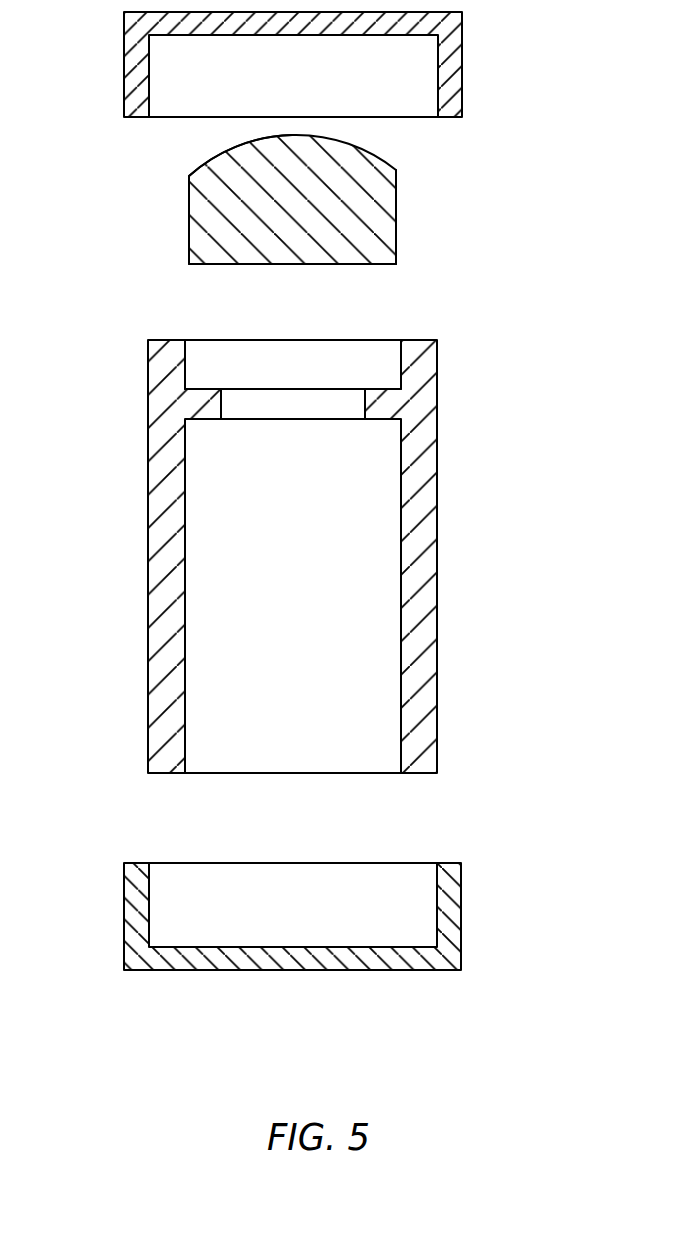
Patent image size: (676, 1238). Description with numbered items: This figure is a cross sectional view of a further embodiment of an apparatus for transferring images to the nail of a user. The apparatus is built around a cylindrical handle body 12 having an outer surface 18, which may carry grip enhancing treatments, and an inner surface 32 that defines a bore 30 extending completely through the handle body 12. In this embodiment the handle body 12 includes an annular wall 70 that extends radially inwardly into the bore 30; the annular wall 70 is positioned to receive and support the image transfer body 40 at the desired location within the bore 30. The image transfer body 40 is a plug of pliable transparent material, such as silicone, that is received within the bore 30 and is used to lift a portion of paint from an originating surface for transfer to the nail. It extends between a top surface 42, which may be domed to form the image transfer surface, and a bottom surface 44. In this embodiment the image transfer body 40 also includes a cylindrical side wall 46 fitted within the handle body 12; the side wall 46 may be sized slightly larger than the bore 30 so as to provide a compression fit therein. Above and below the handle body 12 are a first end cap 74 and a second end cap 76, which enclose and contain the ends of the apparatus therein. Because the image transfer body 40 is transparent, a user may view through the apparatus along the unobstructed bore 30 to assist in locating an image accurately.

The handle body 12 is at (417, 505).
The outer surface 18 is at (438, 604).
The bore 30 is at (348, 748).
The inner surface 32 is at (388, 689).
The image transfer body 40 is at (373, 231).
The top surface 42 is at (203, 162).
The bottom surface 44 is at (233, 265).
The cylindrical side wall 46 is at (397, 195).
The annular wall 70 is at (377, 389).
The first end cap 74 is at (462, 70).
The second end cap 76 is at (461, 930).